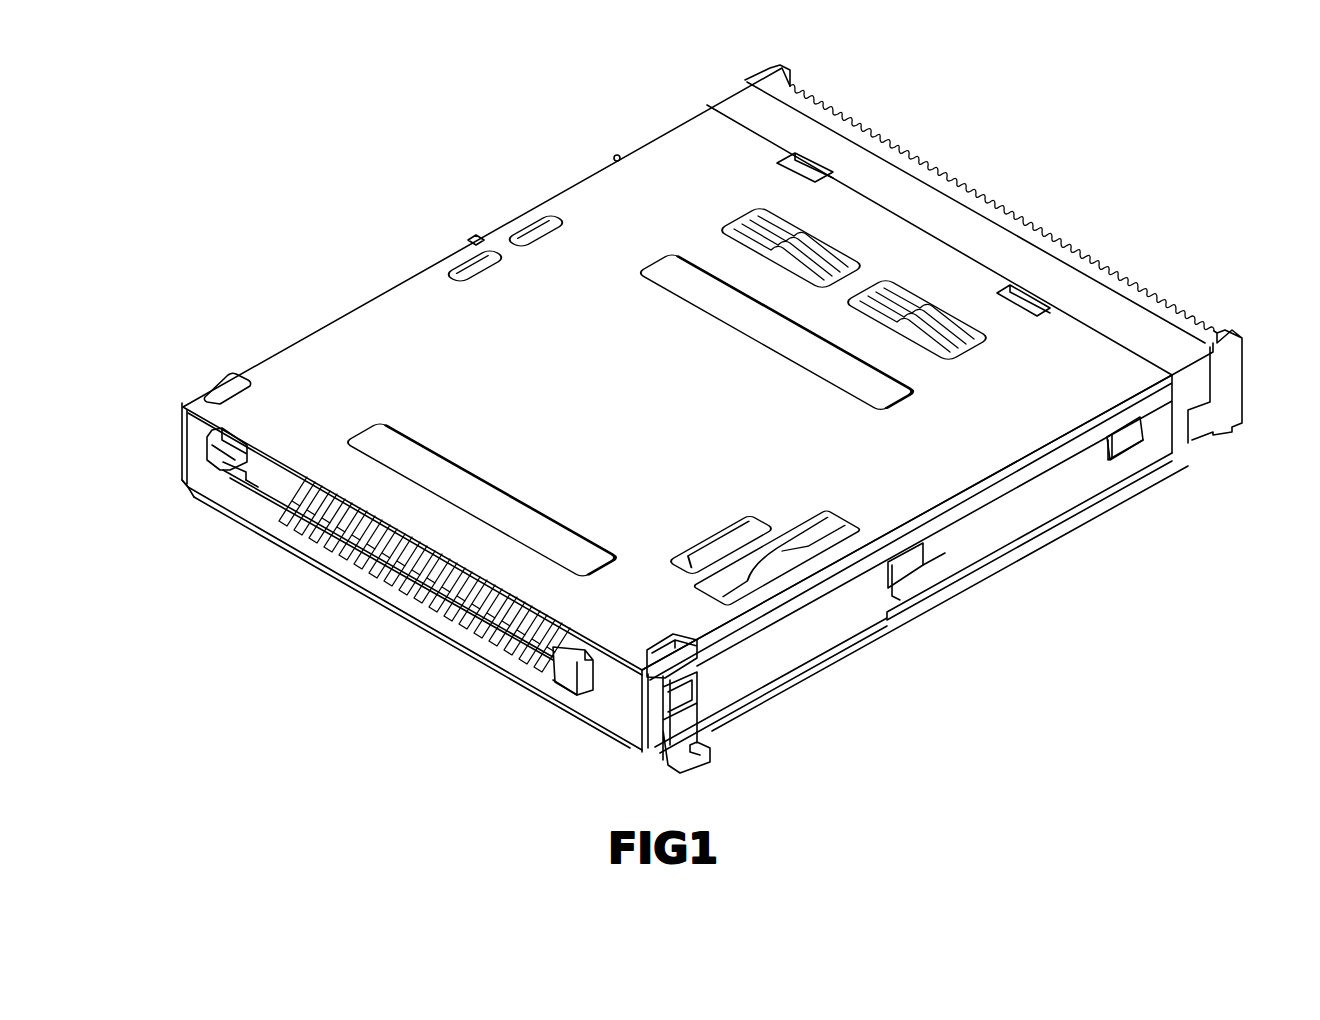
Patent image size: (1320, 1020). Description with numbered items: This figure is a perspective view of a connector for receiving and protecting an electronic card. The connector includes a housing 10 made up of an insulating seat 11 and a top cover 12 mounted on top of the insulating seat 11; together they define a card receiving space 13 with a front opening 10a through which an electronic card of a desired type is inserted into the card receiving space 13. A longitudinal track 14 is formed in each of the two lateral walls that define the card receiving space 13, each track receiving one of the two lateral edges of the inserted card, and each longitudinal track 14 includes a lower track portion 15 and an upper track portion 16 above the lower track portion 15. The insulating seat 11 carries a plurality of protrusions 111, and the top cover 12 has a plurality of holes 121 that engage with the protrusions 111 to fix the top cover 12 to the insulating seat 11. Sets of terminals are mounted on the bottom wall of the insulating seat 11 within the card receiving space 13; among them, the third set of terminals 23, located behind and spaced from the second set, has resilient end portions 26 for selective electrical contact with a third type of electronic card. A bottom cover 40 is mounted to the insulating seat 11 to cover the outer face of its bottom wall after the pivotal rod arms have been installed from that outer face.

The housing 10 is at (964, 162).
The front opening 10a is at (253, 485).
The insulating seat 11 is at (1083, 307).
The protrusions 111 is at (905, 575).
The top cover 12 is at (385, 333).
The holes 121 is at (922, 550).
The card receiving space 13 is at (268, 498).
The longitudinal track 14 is at (203, 472).
The lower track portion 15 is at (238, 467).
The upper track portion 16 is at (213, 445).
The third set of terminals 23 is at (803, 227).
The resilient end portions 26 is at (757, 245).
The bottom cover 40 is at (397, 607).